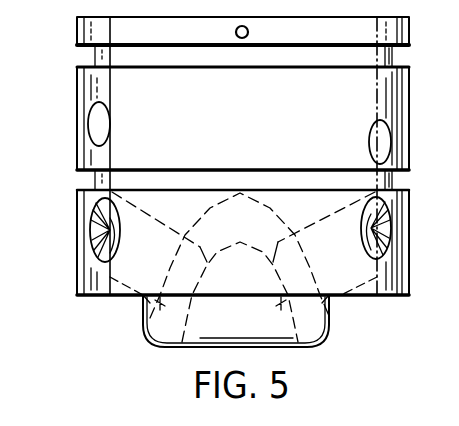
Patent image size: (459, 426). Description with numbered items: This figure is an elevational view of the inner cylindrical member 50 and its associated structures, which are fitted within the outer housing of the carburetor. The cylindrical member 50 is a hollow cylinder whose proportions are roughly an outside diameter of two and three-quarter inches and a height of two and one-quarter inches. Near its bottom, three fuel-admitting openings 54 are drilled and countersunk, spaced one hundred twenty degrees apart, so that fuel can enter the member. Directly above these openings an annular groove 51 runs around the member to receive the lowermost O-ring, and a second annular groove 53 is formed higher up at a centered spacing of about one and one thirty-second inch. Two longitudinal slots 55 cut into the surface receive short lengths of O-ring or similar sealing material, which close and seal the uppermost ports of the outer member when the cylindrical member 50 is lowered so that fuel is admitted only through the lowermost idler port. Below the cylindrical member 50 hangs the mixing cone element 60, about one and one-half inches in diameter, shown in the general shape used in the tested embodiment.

The inner cylindrical member 50 is at (409, 80).
The annular groove 51 is at (92, 183).
The second annular groove 53 is at (89, 62).
The fuel-admitting openings 54 is at (95, 233).
The longitudinal slots 55 is at (110, 122).
The mixing cone element 60 is at (330, 316).